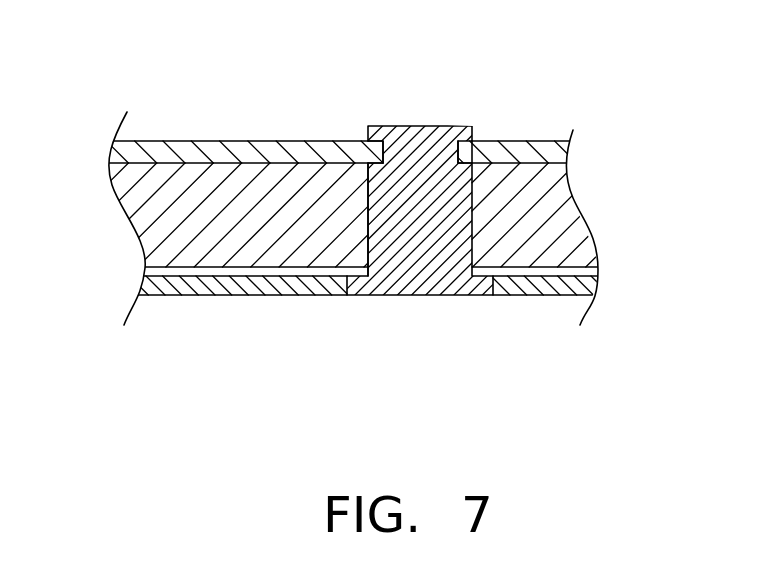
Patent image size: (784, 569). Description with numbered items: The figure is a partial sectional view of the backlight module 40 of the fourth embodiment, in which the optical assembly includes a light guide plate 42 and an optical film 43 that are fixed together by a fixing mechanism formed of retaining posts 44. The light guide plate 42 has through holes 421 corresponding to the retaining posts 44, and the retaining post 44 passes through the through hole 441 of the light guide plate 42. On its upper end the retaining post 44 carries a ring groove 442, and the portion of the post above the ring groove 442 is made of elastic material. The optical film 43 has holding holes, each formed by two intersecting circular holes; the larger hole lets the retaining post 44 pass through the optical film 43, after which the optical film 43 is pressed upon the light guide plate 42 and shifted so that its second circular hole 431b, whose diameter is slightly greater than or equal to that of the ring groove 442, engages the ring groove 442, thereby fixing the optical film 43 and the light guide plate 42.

The backlight module 40 is at (638, 100).
The light guide plate 42 is at (145, 213).
The optical film 43 is at (127, 155).
The retaining post 44 is at (448, 278).
The through hole 441 is at (462, 160).
The ring groove 442 is at (383, 160).
The second circular hole 431b is at (457, 150).
The through hole 421 is at (370, 220).